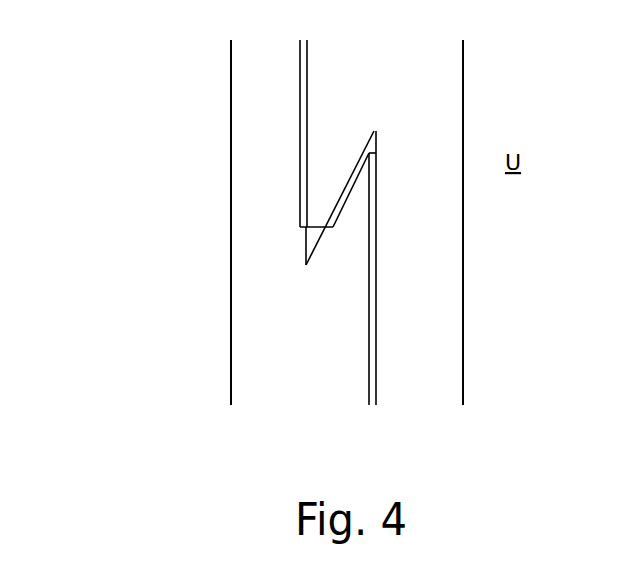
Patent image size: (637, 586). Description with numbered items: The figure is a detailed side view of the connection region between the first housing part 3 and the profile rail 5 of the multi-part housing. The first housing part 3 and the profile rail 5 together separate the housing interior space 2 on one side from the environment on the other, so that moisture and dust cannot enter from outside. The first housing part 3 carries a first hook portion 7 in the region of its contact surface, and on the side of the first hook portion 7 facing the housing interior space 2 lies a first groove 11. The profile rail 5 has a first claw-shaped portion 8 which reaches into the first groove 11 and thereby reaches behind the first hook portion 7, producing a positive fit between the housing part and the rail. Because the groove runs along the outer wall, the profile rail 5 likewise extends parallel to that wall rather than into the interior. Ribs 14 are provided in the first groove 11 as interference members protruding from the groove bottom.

The housing interior space 2 is at (162, 233).
The first housing part 3 is at (255, 245).
The profile rail 5 is at (435, 275).
The first hook portion 7 is at (354, 233).
The first claw-shaped portion 8 is at (325, 202).
The first groove 11 is at (300, 170).
The ribs 14 is at (300, 250).